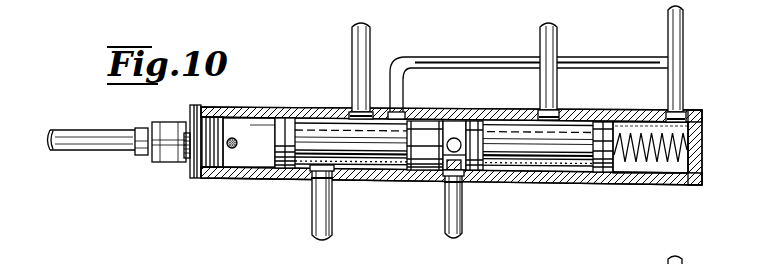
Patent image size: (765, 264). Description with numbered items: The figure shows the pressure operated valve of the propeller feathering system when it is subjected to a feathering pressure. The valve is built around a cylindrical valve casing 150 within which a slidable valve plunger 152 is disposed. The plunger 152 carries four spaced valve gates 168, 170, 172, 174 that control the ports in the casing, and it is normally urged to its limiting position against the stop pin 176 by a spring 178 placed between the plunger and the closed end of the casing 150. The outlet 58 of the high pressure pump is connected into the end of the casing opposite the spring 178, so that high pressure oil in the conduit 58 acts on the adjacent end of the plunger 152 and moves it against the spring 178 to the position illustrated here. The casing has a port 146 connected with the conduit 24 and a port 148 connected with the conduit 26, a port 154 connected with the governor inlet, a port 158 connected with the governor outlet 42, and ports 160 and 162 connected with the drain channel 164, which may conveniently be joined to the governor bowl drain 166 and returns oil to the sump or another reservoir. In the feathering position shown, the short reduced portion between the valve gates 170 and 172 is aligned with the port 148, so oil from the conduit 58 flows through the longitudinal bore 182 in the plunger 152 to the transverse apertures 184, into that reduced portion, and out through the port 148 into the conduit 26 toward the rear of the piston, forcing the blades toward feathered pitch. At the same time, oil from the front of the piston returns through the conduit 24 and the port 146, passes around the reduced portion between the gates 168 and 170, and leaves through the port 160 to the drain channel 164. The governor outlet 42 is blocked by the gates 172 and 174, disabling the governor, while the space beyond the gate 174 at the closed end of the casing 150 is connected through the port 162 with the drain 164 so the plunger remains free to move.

The conduit 24 is at (312, 222).
The conduit 26 is at (445, 218).
The governor outlet 42 is at (555, 46).
The outlet conduit of the high pressure pump 58 is at (121, 116).
The port 146 is at (332, 190).
The port 148 is at (461, 192).
The cylindrical valve casing 150 is at (276, 144).
The valve plunger 152 is at (243, 179).
The port 154 is at (353, 112).
The port 158 is at (553, 108).
The port 160 is at (401, 110).
The port 162 is at (683, 110).
The drain channel 164 is at (669, 28).
The governor bowl drain 166 is at (366, 48).
The valve gate 168 is at (290, 180).
The valve gate 170 is at (432, 180).
The valve gate 172 is at (479, 180).
The valve gate 174 is at (598, 180).
The stop pin 176 is at (236, 138).
The spring 178 is at (648, 173).
The longitudinal bore 182 is at (314, 127).
The transverse apertures 184 is at (453, 137).